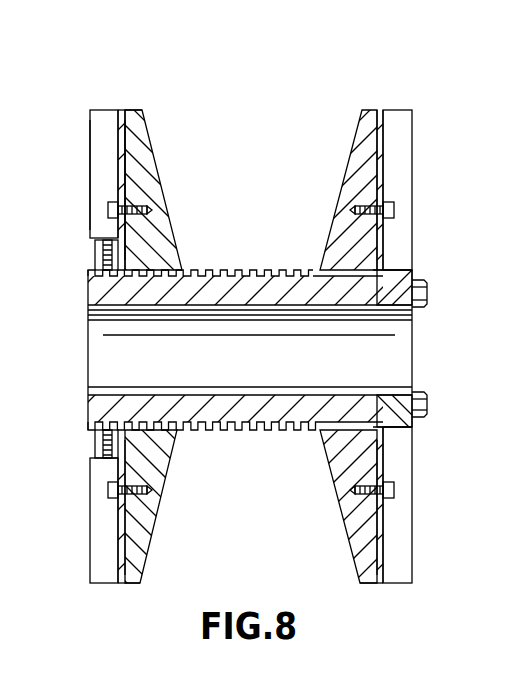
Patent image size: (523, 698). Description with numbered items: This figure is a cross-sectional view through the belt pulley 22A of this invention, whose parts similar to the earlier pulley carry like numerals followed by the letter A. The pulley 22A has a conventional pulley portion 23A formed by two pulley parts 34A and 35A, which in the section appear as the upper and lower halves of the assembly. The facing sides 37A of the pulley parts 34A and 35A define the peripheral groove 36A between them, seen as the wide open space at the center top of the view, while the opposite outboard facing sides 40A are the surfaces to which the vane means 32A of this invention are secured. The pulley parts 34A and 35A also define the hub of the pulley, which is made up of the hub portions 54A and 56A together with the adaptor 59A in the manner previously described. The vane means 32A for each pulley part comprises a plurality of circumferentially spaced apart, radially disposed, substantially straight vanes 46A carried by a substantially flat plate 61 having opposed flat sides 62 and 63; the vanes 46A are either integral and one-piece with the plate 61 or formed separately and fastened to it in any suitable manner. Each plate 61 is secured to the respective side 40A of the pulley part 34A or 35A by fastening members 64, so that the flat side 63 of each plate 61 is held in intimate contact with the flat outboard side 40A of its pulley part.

The belt pulley 22A is at (418, 92).
The pulley portion 23A is at (135, 100).
The vane means 32A is at (112, 547).
The pulley part 34A is at (150, 556).
The pulley part 35A is at (355, 557).
The peripheral groove 36A is at (260, 150).
The facing sides 37A is at (155, 513).
The outboard facing sides 40A is at (118, 160).
The vanes 46A is at (100, 190).
The hub portion 54A is at (283, 434).
The hub portion 56A is at (90, 444).
The adaptor 59A is at (400, 282).
The flat plate 61 is at (115, 529).
The flat side 62 is at (118, 130).
The flat side 63 is at (142, 126).
The fastening members 64 is at (398, 203).